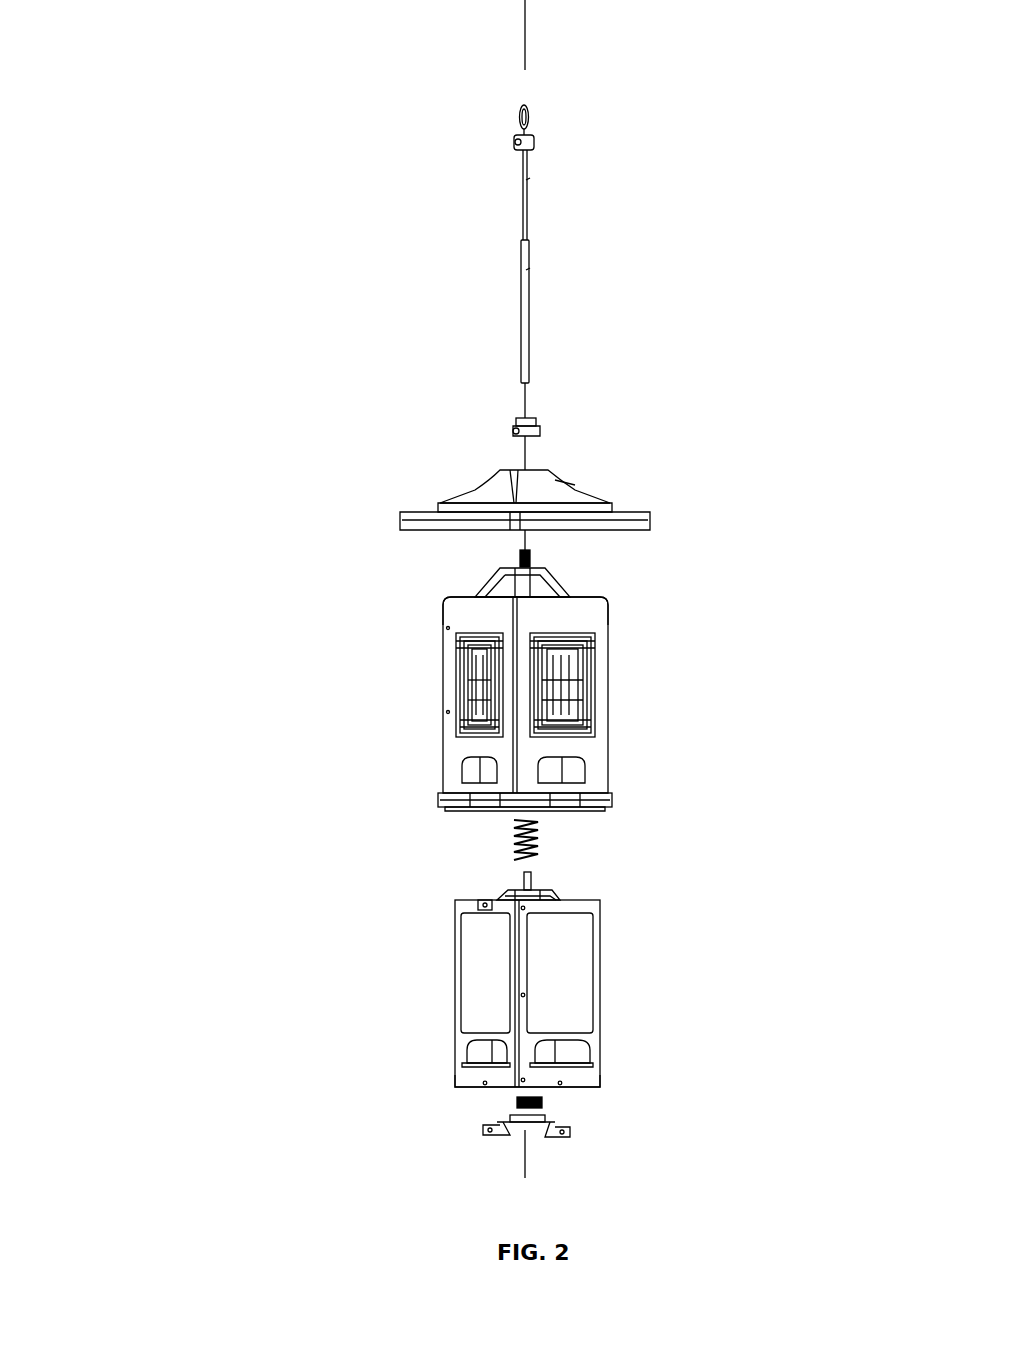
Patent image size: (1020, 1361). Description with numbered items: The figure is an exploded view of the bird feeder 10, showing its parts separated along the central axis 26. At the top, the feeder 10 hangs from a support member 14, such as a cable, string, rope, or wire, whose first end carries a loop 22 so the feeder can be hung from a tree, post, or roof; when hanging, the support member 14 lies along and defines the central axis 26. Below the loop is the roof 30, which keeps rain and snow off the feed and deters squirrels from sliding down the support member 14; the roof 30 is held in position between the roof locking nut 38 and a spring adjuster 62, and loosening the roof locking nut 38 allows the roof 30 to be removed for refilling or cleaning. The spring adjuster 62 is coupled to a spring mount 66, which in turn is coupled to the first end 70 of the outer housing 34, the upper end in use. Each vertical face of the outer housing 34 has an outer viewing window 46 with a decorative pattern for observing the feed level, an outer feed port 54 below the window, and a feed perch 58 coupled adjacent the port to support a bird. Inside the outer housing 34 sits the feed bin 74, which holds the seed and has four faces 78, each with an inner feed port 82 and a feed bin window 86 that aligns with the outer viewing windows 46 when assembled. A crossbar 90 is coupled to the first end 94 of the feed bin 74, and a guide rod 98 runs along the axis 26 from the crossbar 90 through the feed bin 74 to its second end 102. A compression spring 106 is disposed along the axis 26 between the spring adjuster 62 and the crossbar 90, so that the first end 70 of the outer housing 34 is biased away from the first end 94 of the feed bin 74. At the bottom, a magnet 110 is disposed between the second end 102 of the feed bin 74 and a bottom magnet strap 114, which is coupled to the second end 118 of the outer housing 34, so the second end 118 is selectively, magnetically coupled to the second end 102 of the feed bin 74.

The bird feeder 10 is at (187, 375).
The central axis 26 is at (527, 23).
The loop 22 is at (530, 118).
The support member 14 is at (527, 392).
The roof locking nut 38 is at (542, 428).
The roof 30 is at (565, 495).
The spring adjuster 62 is at (533, 568).
The first end of the outer housing 70 is at (585, 592).
The spring mount 66 is at (490, 582).
The outer housing 34 is at (450, 692).
The outer viewing window 46 is at (585, 668).
The outer feed port 54 is at (575, 773).
The feed perch 58 is at (582, 800).
The second end of the outer housing 118 is at (462, 810).
The compression spring 106 is at (540, 840).
The guide rod 98 is at (523, 876).
The first end of the feed bin 94 is at (500, 893).
The crossbar 90 is at (560, 893).
The feed bin 74 is at (601, 970).
The feed bin window 86 is at (578, 947).
The face of the feed bin 78 is at (592, 1045).
The inner feed port 82 is at (480, 1050).
The second end of the feed bin 102 is at (462, 1090).
The magnet 110 is at (515, 1107).
The bottom magnet strap 114 is at (495, 1130).